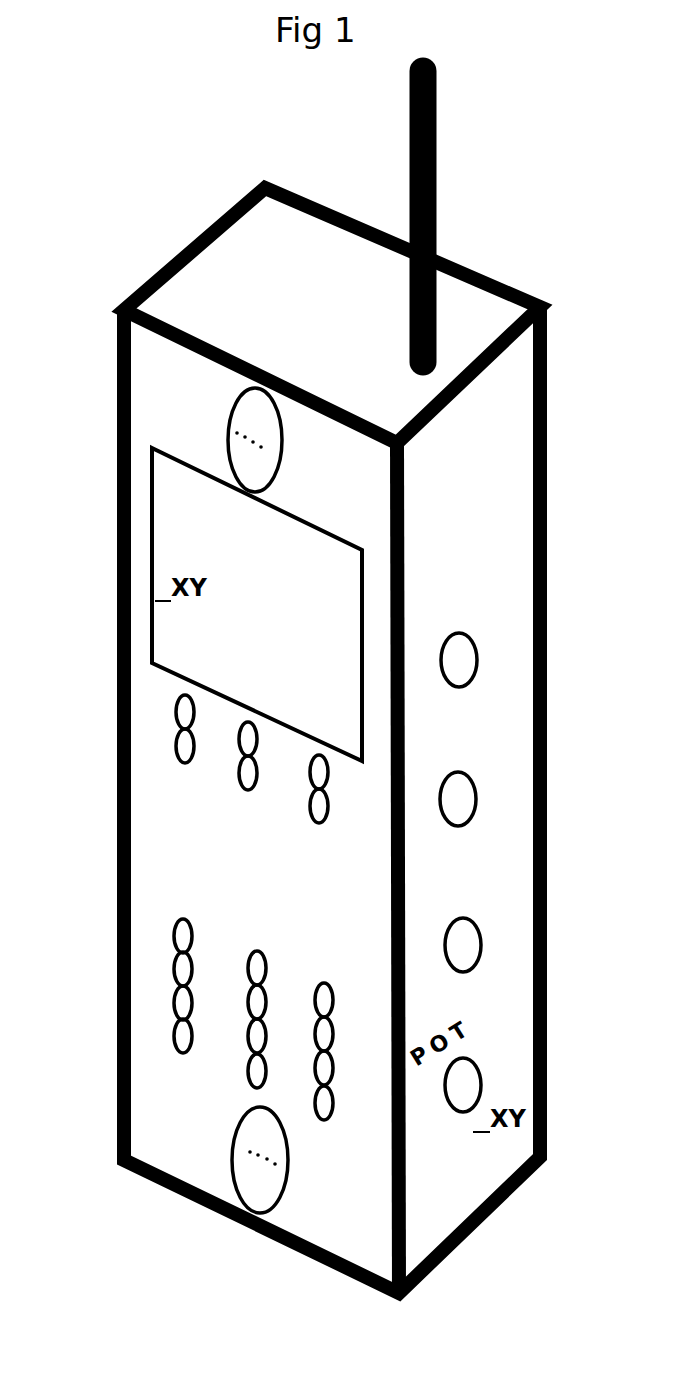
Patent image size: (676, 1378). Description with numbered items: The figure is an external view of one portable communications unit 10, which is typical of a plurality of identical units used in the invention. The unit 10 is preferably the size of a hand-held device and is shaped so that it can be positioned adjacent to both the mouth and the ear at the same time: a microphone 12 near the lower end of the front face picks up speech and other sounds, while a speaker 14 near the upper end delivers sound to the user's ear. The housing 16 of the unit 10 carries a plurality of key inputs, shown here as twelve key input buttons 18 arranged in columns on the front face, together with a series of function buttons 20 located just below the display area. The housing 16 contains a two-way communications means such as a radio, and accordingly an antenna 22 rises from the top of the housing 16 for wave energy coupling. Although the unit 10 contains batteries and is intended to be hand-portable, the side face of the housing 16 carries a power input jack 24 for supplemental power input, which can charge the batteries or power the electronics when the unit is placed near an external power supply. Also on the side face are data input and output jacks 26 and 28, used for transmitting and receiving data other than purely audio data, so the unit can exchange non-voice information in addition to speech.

The unit 10 is at (113, 663).
The microphone 12 is at (288, 1200).
The speaker 14 is at (276, 483).
The housing 16 is at (182, 272).
The key input buttons 18 is at (333, 1142).
The function buttons 20 is at (331, 825).
The antenna 22 is at (437, 335).
The power input jack 24 is at (485, 978).
The data input and output jack 26 is at (479, 830).
The data input and output jack 28 is at (479, 696).